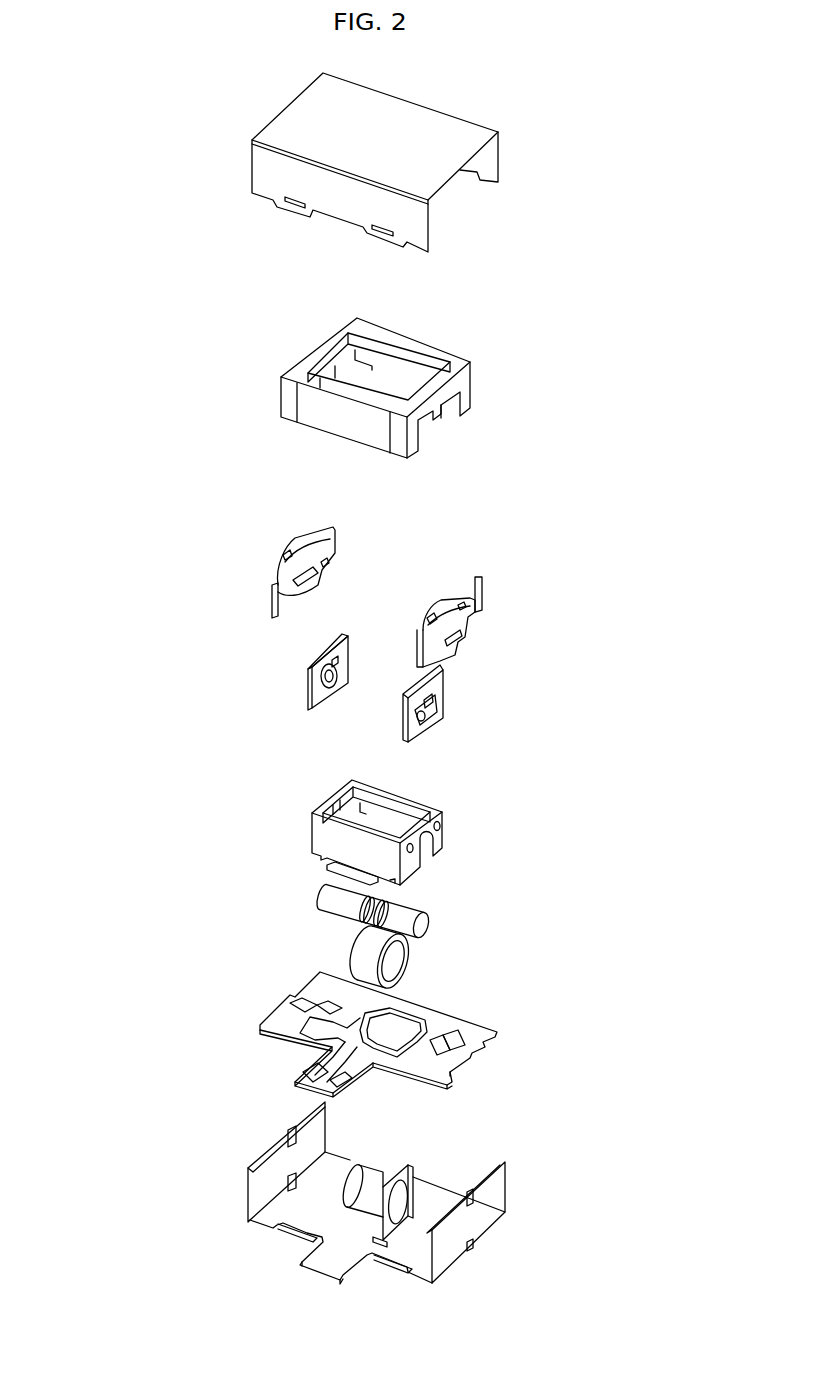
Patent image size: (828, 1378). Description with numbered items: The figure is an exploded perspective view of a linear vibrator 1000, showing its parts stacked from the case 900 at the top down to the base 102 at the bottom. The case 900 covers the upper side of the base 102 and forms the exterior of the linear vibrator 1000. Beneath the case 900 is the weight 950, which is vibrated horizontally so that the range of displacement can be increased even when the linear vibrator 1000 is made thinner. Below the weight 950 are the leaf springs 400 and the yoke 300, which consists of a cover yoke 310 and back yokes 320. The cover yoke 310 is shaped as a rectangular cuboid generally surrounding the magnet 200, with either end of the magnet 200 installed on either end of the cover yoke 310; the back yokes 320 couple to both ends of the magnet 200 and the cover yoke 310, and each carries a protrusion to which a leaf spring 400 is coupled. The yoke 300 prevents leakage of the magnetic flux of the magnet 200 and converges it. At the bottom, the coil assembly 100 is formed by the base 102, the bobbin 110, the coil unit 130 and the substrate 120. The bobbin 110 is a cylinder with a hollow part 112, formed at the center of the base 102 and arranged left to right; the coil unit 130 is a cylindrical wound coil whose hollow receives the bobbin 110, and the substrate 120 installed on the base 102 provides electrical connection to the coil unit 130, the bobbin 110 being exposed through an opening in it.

The linear vibrator 1000 is at (150, 106).
The case 900 is at (500, 153).
The weight 950 is at (472, 367).
The leaf spring 400 is at (275, 568).
The yoke 300 is at (593, 741).
The back yoke 320 is at (305, 688).
The cover yoke 310 is at (445, 822).
The magnet 200 is at (425, 908).
The coil assembly 100 is at (623, 958).
The coil unit 130 is at (410, 957).
The substrate 120 is at (497, 1030).
The bobbin 110 is at (385, 1165).
The hollow part 112 is at (402, 1200).
The base 102 is at (507, 1180).